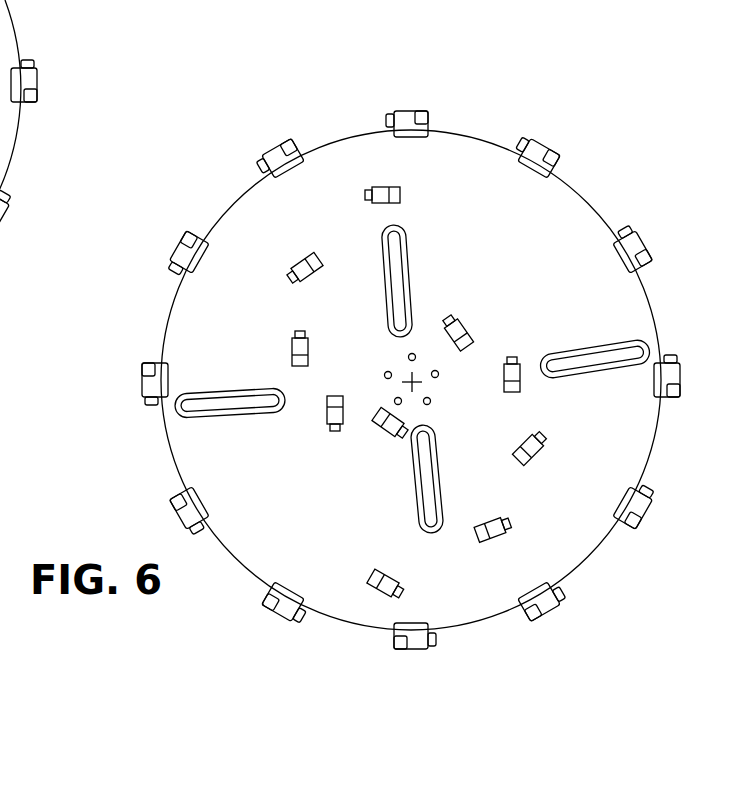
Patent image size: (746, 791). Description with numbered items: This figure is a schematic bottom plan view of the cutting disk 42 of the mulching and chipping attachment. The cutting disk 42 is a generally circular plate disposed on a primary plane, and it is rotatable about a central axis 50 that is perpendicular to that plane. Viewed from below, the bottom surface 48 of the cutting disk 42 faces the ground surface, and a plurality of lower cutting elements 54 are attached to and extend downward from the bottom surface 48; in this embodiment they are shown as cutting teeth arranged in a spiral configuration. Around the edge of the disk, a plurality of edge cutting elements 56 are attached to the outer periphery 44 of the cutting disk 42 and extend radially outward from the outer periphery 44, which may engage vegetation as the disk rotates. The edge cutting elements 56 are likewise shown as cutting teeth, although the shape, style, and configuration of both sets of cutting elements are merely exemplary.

The cutting disk 42 is at (485, 106).
The outer periphery 44 is at (651, 300).
The bottom surface 48 is at (562, 213).
The central axis 50 is at (414, 383).
The lower cutting elements 54 is at (305, 266).
The edge cutting elements 56 is at (405, 117).